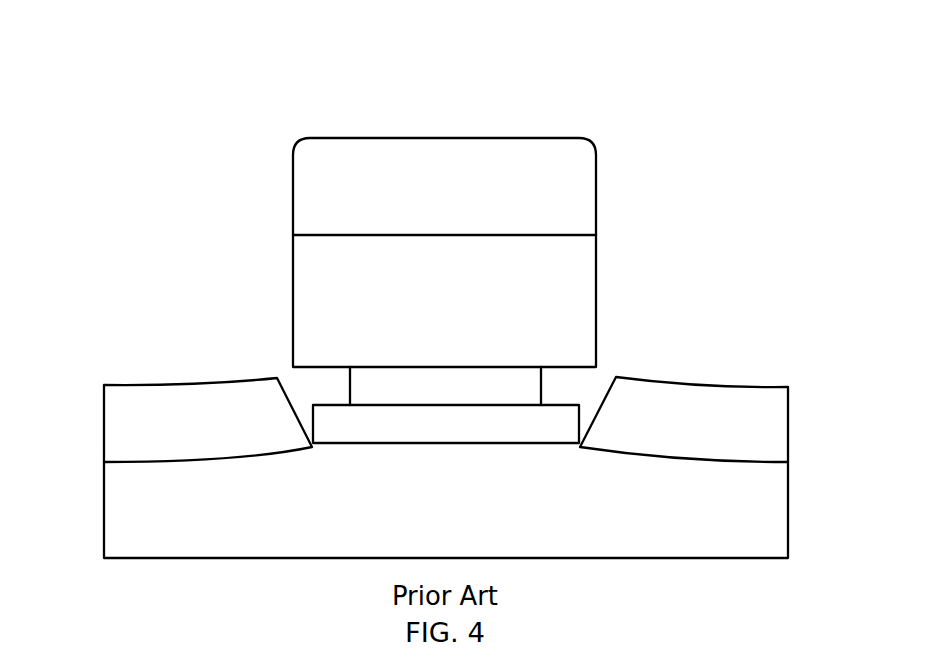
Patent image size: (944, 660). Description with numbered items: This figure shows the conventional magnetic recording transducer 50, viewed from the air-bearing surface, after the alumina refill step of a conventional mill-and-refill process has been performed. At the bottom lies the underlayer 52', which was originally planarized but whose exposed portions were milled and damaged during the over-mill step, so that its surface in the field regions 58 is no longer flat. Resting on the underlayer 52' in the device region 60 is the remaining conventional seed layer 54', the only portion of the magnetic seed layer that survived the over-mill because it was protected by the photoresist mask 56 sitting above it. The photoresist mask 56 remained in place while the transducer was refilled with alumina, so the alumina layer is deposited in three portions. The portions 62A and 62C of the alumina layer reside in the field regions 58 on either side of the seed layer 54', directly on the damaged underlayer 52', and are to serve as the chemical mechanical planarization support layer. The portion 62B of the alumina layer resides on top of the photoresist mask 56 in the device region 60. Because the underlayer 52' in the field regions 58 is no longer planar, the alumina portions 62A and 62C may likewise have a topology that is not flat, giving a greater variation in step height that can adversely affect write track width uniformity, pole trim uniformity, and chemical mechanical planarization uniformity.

The conventional transducer 50 is at (462, 57).
The underlayer 52' is at (474, 507).
The conventional seed layer 54' is at (388, 377).
The photoresist mask 56 is at (627, 330).
The field regions 58 is at (178, 253).
The device region 60 is at (427, 120).
The alumina layer portion 62A is at (140, 384).
The alumina layer portion 62B is at (293, 193).
The alumina layer portion 62C is at (730, 383).